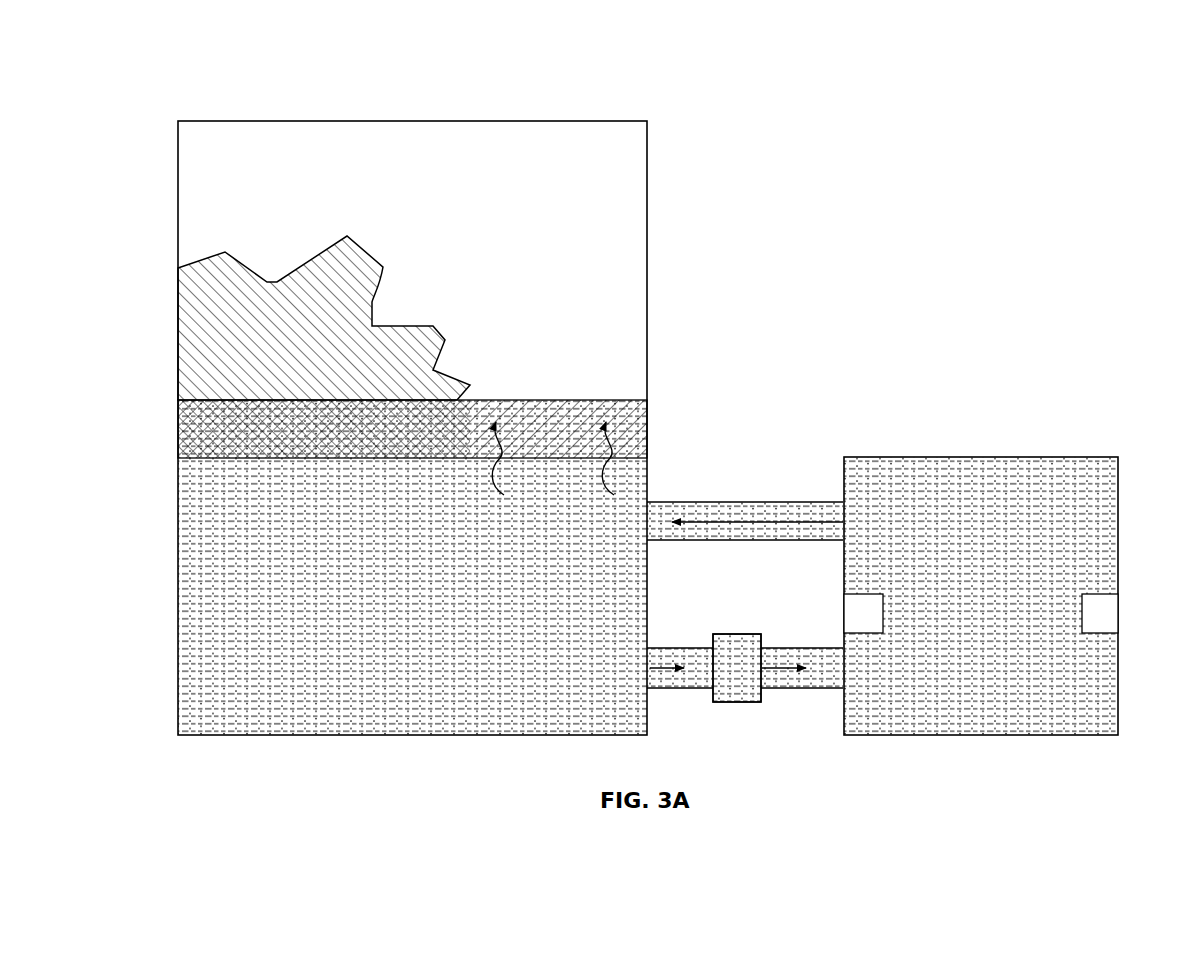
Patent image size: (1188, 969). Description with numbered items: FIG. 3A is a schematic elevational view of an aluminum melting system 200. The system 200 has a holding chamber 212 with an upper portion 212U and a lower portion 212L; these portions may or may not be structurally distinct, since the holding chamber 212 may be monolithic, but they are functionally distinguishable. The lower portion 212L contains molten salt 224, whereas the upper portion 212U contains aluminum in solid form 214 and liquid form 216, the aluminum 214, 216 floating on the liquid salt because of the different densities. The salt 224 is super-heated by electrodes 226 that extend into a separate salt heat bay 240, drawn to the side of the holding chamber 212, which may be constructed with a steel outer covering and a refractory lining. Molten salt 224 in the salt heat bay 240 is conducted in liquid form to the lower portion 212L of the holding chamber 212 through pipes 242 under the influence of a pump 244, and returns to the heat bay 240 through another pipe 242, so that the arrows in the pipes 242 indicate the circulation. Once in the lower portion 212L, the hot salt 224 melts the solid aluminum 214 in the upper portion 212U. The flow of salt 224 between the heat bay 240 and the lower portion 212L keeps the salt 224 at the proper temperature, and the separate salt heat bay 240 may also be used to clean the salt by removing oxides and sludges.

The aluminum melting system 200 is at (188, 68).
The holding chamber 212 is at (659, 258).
The upper portion of holding chamber 212U is at (172, 308).
The lower portion of holding chamber 212L is at (172, 580).
The solid aluminum 214 is at (324, 318).
The liquid aluminum 216 is at (412, 447).
The molten salt 224 is at (648, 596).
The electrodes 226 is at (860, 594).
The salt heat bay 240 is at (902, 457).
The pipes 242 is at (718, 502).
The pump 244 is at (738, 634).